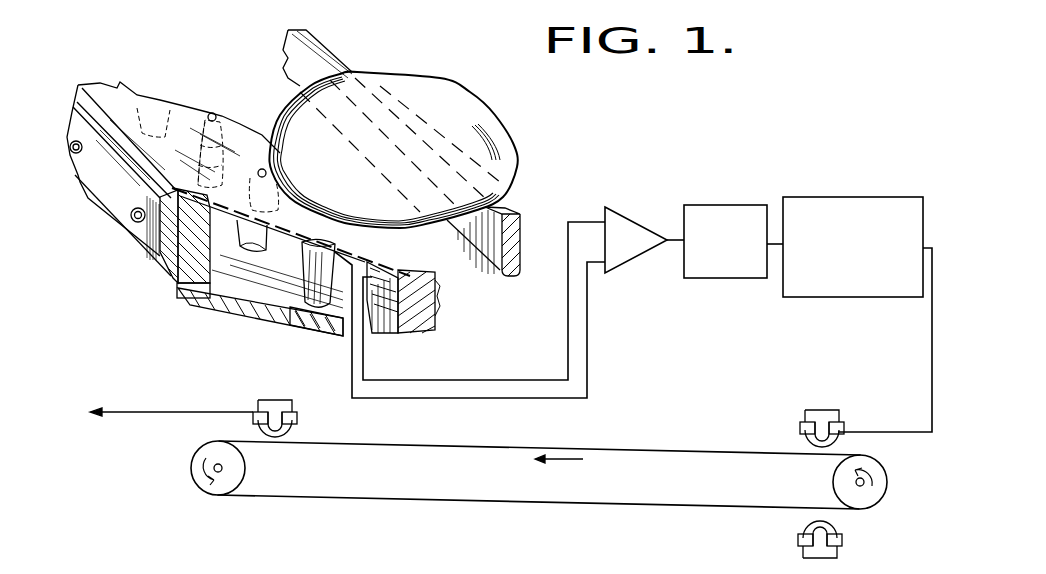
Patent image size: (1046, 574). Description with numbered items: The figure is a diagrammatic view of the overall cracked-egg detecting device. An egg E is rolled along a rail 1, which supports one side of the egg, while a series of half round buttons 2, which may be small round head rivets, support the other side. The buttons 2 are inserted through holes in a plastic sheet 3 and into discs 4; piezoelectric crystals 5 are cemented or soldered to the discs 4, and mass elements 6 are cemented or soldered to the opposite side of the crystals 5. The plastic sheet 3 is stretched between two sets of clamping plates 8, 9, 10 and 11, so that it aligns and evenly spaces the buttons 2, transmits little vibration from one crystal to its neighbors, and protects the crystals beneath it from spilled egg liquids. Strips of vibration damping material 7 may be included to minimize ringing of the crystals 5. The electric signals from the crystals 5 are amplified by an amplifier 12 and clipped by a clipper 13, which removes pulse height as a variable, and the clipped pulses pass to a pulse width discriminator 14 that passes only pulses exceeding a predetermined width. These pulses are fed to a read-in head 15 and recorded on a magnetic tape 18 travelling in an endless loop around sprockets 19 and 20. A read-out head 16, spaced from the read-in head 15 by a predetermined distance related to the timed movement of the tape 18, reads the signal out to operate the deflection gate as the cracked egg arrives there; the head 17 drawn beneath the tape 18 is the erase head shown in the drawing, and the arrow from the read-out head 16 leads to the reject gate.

The rail 1 is at (521, 240).
The half round buttons 2 is at (266, 174).
The plastic sheet 3 is at (242, 143).
The discs 4 is at (268, 244).
The piezoelectric crystals 5 is at (302, 252).
The mass elements 6 is at (318, 302).
The vibration damping material 7 is at (248, 302).
The clamping plate 8 is at (168, 284).
The clamping plate 9 is at (137, 170).
The clamping plate 10 is at (386, 318).
The clamping plate 11 is at (428, 310).
The amplifier 12 is at (628, 212).
The clipper 13 is at (723, 212).
The pulse width discriminator 14 is at (895, 220).
The read-in head 15 is at (800, 432).
The read-out head 16 is at (298, 418).
The erase head 17 is at (843, 534).
The magnetic tape 18 is at (653, 452).
The sprocket 19 is at (883, 476).
The sprocket 20 is at (191, 468).